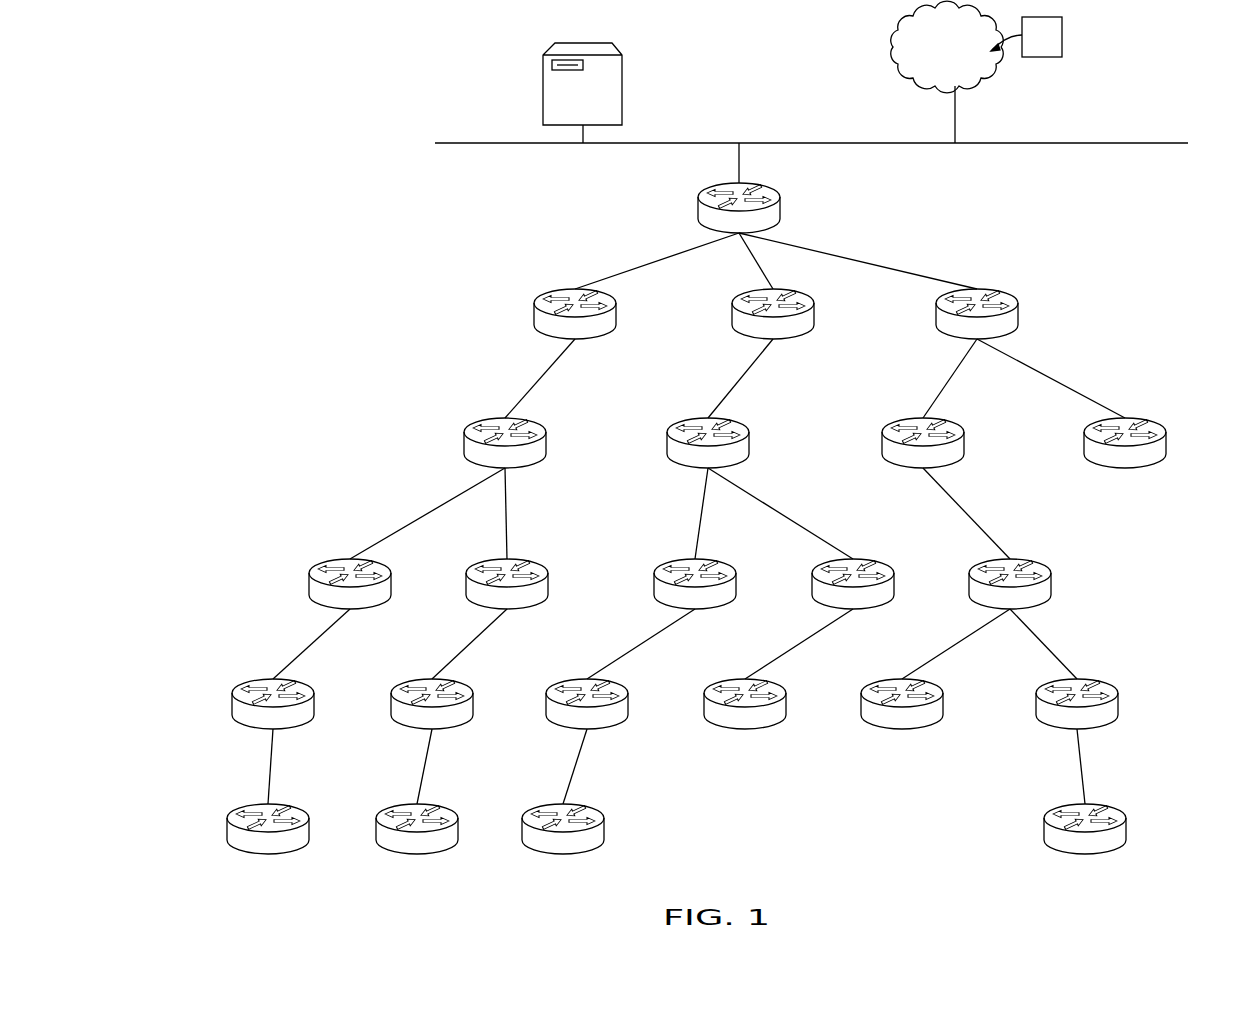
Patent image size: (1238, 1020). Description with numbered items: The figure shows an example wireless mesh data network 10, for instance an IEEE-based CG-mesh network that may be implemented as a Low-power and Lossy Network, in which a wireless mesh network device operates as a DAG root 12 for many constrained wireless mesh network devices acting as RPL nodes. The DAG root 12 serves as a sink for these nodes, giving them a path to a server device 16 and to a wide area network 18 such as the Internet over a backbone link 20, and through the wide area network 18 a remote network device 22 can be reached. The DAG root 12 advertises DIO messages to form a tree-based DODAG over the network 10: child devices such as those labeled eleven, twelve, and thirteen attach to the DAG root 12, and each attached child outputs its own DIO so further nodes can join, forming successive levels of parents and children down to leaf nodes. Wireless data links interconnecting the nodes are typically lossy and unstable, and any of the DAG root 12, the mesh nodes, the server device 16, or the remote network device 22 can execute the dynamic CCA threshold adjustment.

The wireless mesh data network 10 is at (1133, 264).
The wireless mesh network device operating as DAG root 12 is at (780, 211).
The server device 16 is at (622, 78).
The wide area network 18 is at (959, 73).
The backbone link 20 is at (1047, 143).
The remote network device 22 is at (1053, 47).